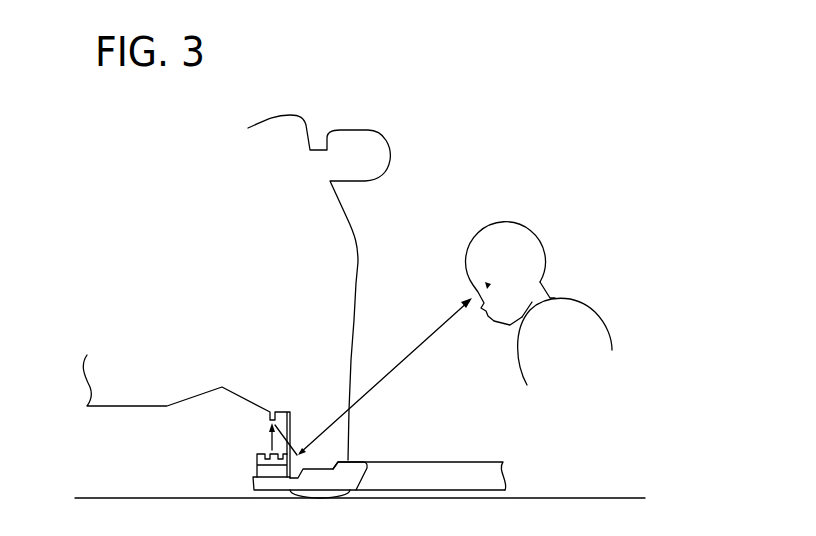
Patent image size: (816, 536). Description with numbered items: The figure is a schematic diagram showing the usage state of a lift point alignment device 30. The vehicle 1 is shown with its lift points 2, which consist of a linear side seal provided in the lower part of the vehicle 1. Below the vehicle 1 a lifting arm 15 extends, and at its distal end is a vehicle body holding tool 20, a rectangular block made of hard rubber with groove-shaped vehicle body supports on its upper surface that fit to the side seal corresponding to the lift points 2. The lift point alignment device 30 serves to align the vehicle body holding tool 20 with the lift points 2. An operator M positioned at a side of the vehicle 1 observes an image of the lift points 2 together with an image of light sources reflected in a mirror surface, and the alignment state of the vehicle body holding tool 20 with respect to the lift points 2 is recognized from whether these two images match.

The vehicle 1 is at (353, 217).
The lift points 2 is at (268, 414).
The lifting arm 15 is at (473, 450).
The vehicle body holding tool 20 is at (257, 460).
The lift point alignment device 30 is at (303, 460).
The operator M is at (597, 317).